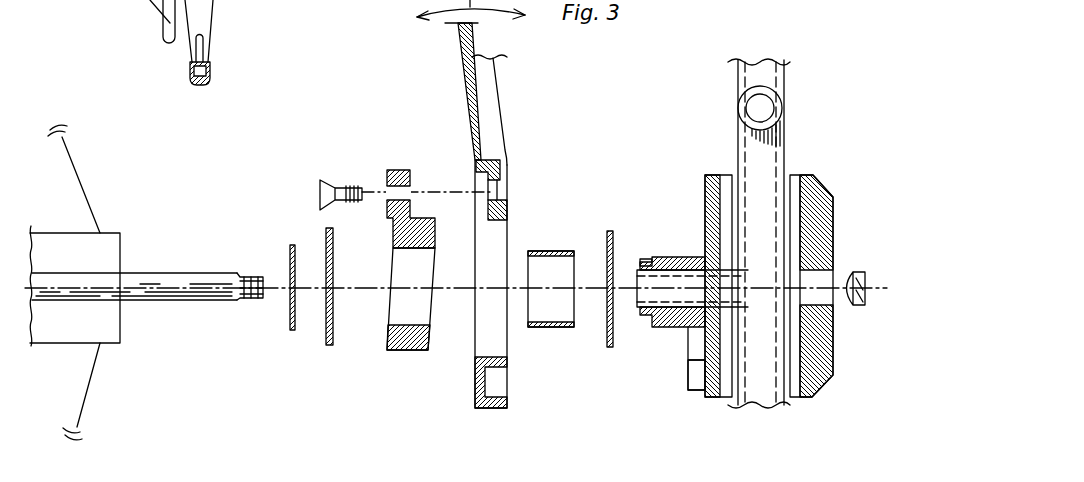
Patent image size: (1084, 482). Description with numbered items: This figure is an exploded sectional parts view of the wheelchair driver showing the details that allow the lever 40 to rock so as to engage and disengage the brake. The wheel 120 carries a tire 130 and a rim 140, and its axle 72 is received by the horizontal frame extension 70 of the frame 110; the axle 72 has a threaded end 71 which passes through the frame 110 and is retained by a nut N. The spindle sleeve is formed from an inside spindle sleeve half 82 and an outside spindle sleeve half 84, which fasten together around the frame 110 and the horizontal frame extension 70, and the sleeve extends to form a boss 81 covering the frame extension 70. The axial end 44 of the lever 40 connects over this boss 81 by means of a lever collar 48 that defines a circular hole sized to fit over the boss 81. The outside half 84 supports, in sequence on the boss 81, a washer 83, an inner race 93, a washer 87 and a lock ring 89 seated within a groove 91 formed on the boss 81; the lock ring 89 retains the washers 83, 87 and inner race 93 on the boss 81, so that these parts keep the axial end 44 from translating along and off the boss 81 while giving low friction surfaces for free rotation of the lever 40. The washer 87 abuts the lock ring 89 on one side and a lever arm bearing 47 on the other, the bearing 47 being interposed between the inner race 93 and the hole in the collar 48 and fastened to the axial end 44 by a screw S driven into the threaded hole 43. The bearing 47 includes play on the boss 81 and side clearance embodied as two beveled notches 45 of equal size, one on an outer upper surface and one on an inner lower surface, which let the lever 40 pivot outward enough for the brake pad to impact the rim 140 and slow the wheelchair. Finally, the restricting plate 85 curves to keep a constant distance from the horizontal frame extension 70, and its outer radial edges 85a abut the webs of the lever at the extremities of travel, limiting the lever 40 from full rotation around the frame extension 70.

The wheel 120 is at (100, 250).
The axle 72 is at (160, 283).
The threaded end 71 is at (246, 300).
The lock ring 89 is at (288, 337).
The washer 87 is at (328, 350).
The beveled notches 45 is at (393, 228).
The lever arm bearing 47 is at (400, 352).
The lever collar 48 is at (475, 345).
The lever 40 is at (490, 130).
The axial end 44 is at (497, 166).
The threaded hole 43 is at (497, 187).
The inner race 93 is at (548, 332).
The washer 83 is at (615, 350).
The horizontal frame extension 70 is at (703, 283).
The boss 81 is at (672, 257).
The groove 91 is at (649, 259).
The restricting plate 85 is at (695, 333).
The outer radial edges 85a is at (699, 373).
The outside spindle sleeve half 84 is at (724, 188).
The frame 110 is at (760, 162).
The inside spindle sleeve half 82 is at (815, 205).
The nut N is at (856, 306).
The screw S is at (337, 190).
The rim 140 is at (206, 63).
The tire 130 is at (207, 80).